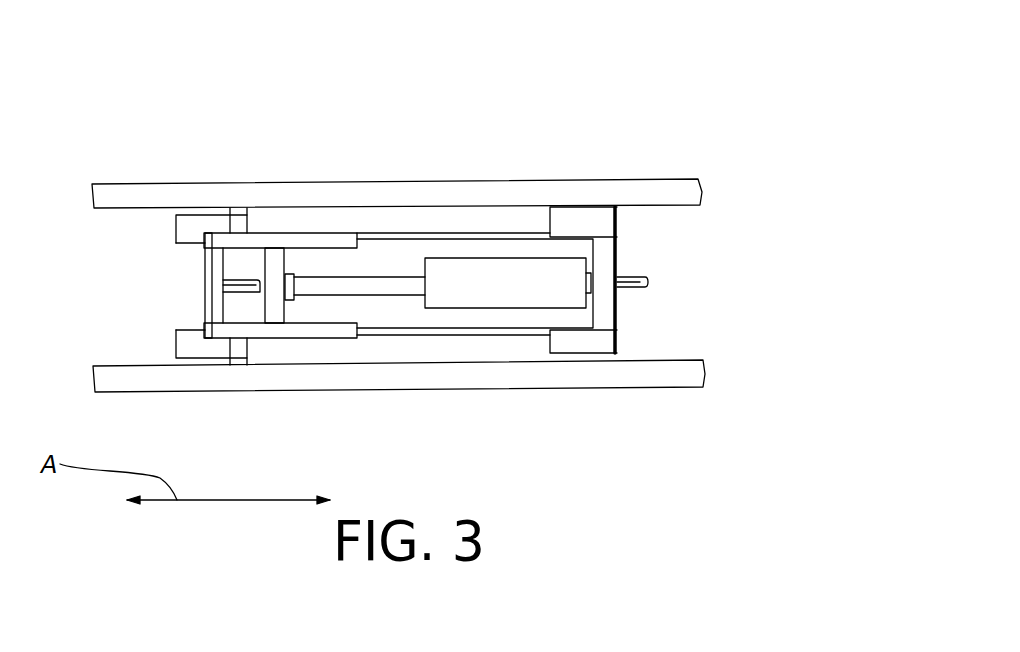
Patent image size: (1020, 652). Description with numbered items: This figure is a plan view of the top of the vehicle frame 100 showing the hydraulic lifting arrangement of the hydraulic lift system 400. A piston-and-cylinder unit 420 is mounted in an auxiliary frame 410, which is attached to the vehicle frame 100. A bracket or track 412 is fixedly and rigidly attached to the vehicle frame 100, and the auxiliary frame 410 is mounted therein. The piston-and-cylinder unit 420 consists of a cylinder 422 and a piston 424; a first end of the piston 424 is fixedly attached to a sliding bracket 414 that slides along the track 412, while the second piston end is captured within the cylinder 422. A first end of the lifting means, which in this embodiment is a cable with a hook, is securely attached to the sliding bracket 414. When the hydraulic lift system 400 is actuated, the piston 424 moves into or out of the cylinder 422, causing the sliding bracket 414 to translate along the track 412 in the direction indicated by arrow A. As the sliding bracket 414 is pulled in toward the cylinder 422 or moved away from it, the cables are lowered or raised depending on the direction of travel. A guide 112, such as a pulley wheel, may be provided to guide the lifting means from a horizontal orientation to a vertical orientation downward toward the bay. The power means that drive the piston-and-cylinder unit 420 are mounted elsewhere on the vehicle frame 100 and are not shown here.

The vehicle frame 100 is at (636, 190).
The guide 112 is at (247, 290).
The hydraulic lift system 400 is at (422, 139).
The auxiliary frame 410 is at (195, 222).
The track 412 is at (527, 215).
The sliding bracket 414 is at (231, 243).
The piston-and-cylinder unit 420 is at (483, 272).
The cylinder 422 is at (567, 287).
The piston 424 is at (390, 280).